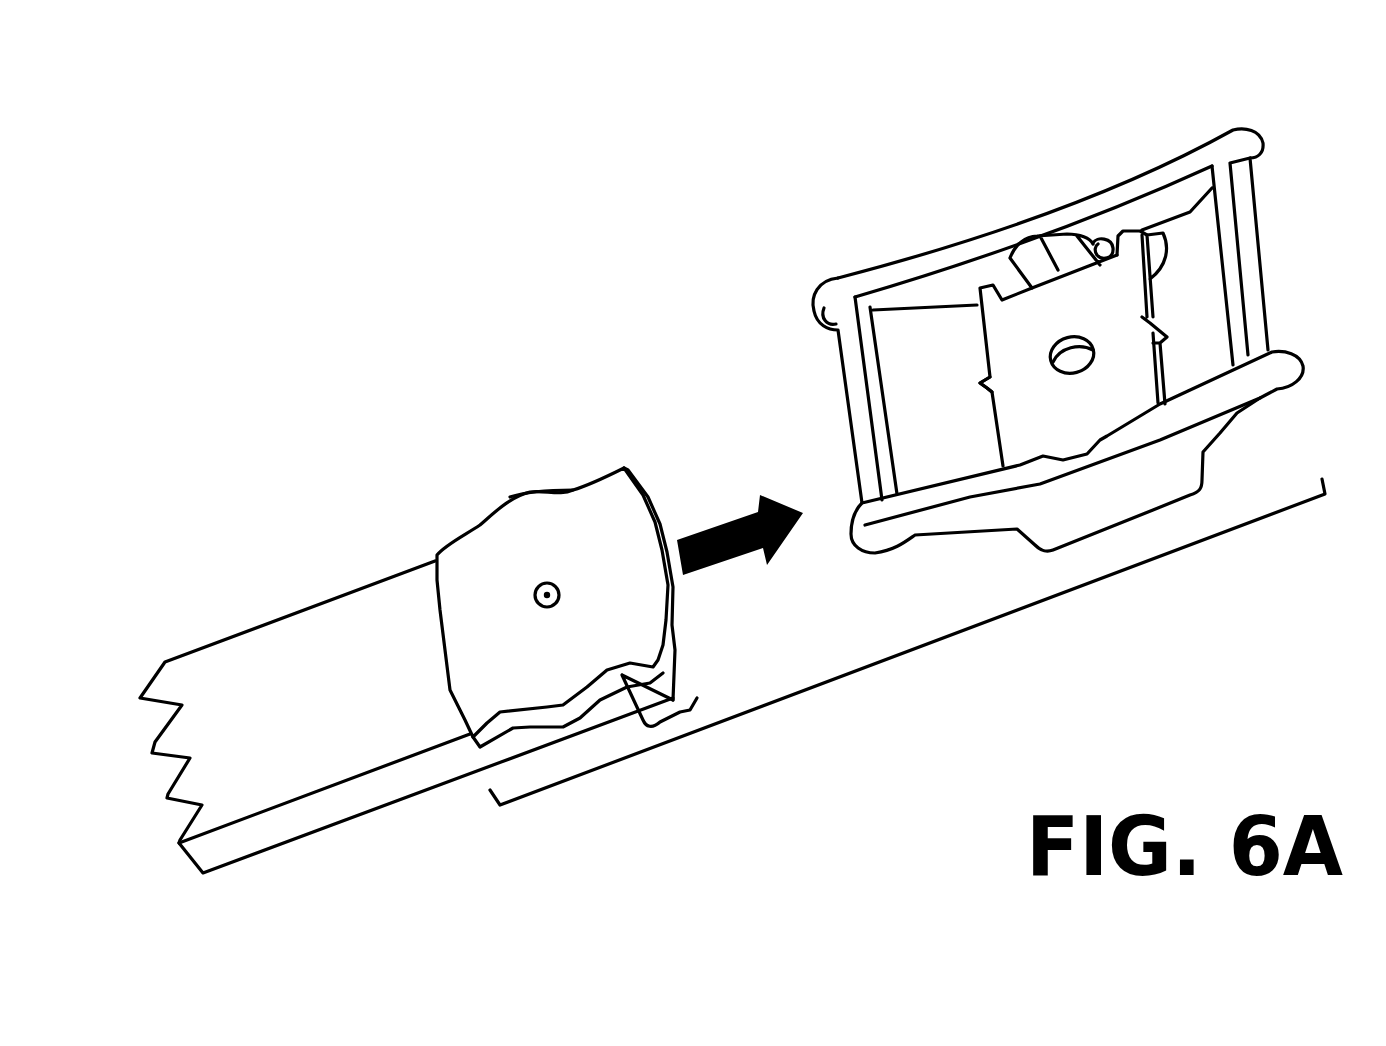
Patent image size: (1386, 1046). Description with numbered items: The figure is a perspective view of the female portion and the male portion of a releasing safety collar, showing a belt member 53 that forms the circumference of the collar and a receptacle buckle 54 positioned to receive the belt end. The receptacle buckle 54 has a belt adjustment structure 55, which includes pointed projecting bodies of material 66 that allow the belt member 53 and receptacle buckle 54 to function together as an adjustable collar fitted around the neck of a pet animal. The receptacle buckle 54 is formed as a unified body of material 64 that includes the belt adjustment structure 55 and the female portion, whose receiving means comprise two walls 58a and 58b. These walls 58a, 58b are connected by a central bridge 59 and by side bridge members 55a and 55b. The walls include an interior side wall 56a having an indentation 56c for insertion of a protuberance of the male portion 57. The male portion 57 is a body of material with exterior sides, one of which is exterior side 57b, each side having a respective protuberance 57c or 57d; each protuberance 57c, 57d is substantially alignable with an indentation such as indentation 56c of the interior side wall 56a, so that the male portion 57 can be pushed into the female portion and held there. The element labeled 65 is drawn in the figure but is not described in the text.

The belt member 53 is at (290, 633).
The receptacle buckle 54 is at (917, 655).
The belt adjustment structure 55 is at (845, 303).
The side bridge member 55a is at (853, 377).
The side bridge member 55b is at (1225, 218).
The interior side wall 56a is at (1102, 243).
The indentation 56c is at (1040, 236).
The male portion 57 is at (460, 547).
The exterior side 57b is at (688, 710).
The protuberance 57c is at (528, 495).
The protuberance 57d is at (558, 700).
The wall 58a is at (942, 255).
The wall 58b is at (1203, 453).
The central bridge 59 is at (1032, 342).
The unified body of material 64 is at (875, 256).
The tongue notch 65 is at (987, 388).
The pointed projecting body of material 66 is at (1202, 302).